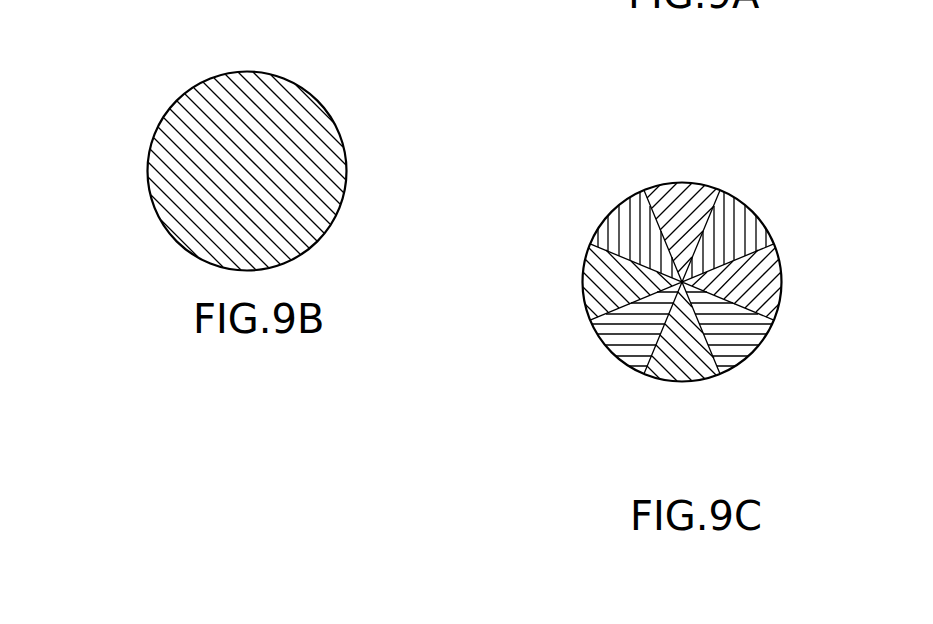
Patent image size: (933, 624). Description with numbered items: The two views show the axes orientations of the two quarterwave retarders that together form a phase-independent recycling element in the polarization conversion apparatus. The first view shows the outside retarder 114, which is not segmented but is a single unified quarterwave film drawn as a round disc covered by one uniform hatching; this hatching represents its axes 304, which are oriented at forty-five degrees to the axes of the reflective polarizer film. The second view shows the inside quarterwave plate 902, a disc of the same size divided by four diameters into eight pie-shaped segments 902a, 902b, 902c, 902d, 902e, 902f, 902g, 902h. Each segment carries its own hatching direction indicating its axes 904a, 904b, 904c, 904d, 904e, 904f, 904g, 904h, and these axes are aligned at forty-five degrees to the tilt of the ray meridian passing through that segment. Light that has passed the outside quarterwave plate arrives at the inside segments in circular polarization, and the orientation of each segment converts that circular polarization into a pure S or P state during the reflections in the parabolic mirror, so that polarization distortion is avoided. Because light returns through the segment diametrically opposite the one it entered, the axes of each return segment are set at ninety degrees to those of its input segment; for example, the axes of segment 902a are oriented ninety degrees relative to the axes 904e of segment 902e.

In FIG. 9B, the outside quarterwave retarder 114 is at (322, 98).
In FIG. 9B, the axes of outside retarder 304 is at (288, 176).
In FIG. 9C, the inside quarterwave plate 902 is at (478, 422).
In FIG. 9C, the segment 902a is at (714, 184).
In FIG. 9C, the segment 902b is at (617, 199).
In FIG. 9C, the segment 902c is at (569, 264).
In FIG. 9C, the segment 902d is at (586, 342).
In FIG. 9C, the segment 902e is at (659, 380).
In FIG. 9C, the segment 902f is at (745, 363).
In FIG. 9C, the segment 902g is at (794, 298).
In FIG. 9C, the segment 902h is at (777, 224).
In FIG. 9C, the segment axes 904a is at (685, 213).
In FIG. 9C, the segment axes 904b is at (637, 237).
In FIG. 9C, the segment axes 904c is at (583, 283).
In FIG. 9C, the segment axes 904d is at (597, 335).
In FIG. 9C, the segment axes 904e is at (652, 367).
In FIG. 9C, the segment axes 904f is at (727, 355).
In FIG. 9C, the segment axes 904g is at (774, 297).
In FIG. 9C, the segment axes 904h is at (737, 237).